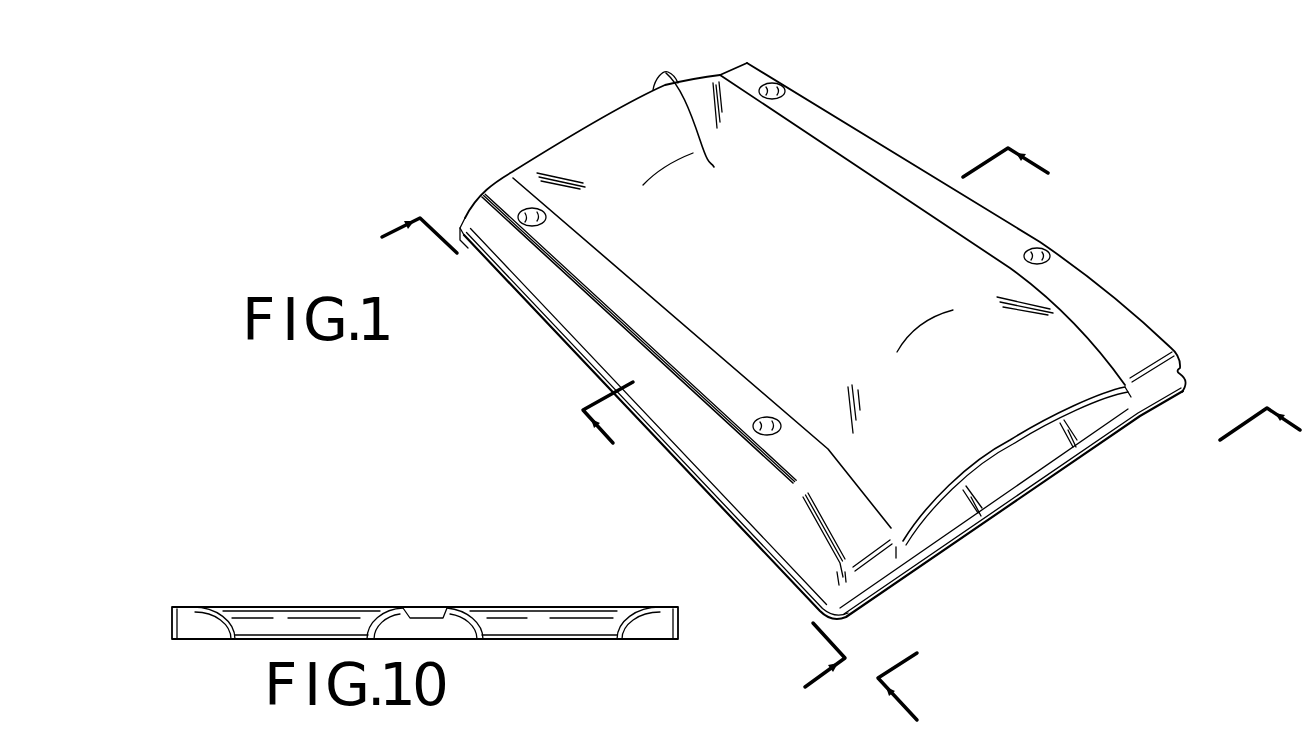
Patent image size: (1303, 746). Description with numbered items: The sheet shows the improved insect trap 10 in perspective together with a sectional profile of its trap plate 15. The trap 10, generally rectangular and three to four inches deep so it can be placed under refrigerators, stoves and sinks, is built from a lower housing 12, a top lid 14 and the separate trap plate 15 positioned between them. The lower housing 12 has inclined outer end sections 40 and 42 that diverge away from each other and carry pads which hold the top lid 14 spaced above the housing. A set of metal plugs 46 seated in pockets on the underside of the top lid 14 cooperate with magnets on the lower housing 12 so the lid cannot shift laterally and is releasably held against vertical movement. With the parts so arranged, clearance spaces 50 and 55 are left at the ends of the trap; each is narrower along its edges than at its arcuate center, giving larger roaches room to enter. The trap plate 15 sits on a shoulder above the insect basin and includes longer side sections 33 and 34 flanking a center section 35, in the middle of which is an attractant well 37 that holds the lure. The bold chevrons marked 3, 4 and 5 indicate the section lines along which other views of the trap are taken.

In FIG. 1, the insect trap 10 is at (904, 146).
In FIG. 1, the lower housing 12 is at (1003, 517).
In FIG. 1, the top lid 14 is at (963, 265).
In FIG. 10, the trap plate 15 is at (170, 623).
In FIG. 10, the longer side section 33 is at (672, 578).
In FIG. 10, the longer side section 34 is at (192, 573).
In FIG. 10, the center section 35 is at (400, 605).
In FIG. 10, the attractant well 37 is at (427, 610).
In FIG. 1, the outer end section 40 is at (1050, 455).
In FIG. 1, the outer end section 42 is at (593, 118).
In FIG. 1, the metal plugs 46 is at (523, 212).
In FIG. 1, the clearance space 50 is at (980, 470).
In FIG. 1, the clearance space 55 is at (702, 137).
In FIG. 1, the section line 3 is at (1075, 550).
In FIG. 1, the section line 4 is at (624, 436).
In FIG. 1, the section line 5 is at (799, 277).